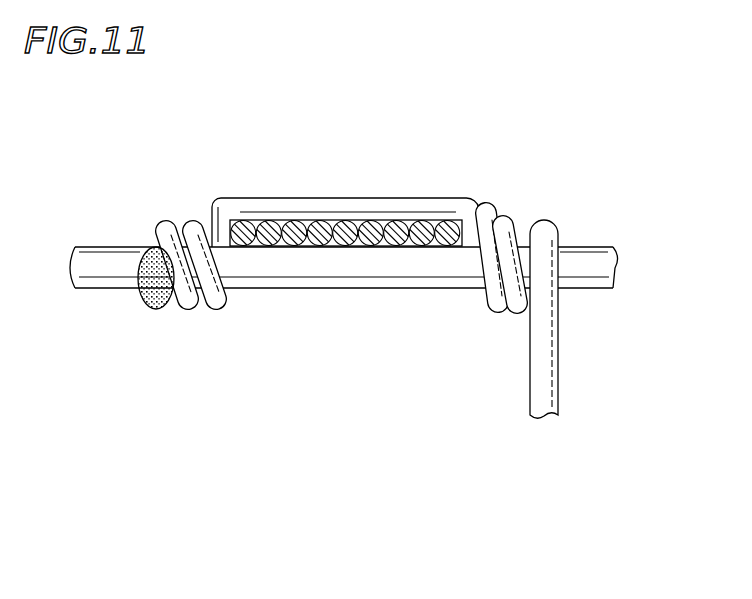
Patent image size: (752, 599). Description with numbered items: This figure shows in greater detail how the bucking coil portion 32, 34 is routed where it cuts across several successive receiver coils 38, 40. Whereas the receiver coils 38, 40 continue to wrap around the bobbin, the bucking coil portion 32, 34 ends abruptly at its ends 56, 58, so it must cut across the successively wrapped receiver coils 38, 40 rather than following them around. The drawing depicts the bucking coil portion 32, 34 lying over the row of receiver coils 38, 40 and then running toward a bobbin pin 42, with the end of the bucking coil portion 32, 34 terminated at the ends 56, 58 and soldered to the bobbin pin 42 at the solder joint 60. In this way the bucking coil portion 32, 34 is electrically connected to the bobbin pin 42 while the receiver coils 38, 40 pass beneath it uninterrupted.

The bucking coil portion 32 is at (345, 182).
The bucking coil portion 34 is at (312, 198).
The receiver coil 38 is at (346, 303).
The receiver coil 40 is at (392, 236).
The bobbin pin 42 is at (92, 290).
The bucking coil end 56 is at (351, 263).
The bucking coil end 58 is at (351, 263).
The solder joint 60 is at (154, 242).